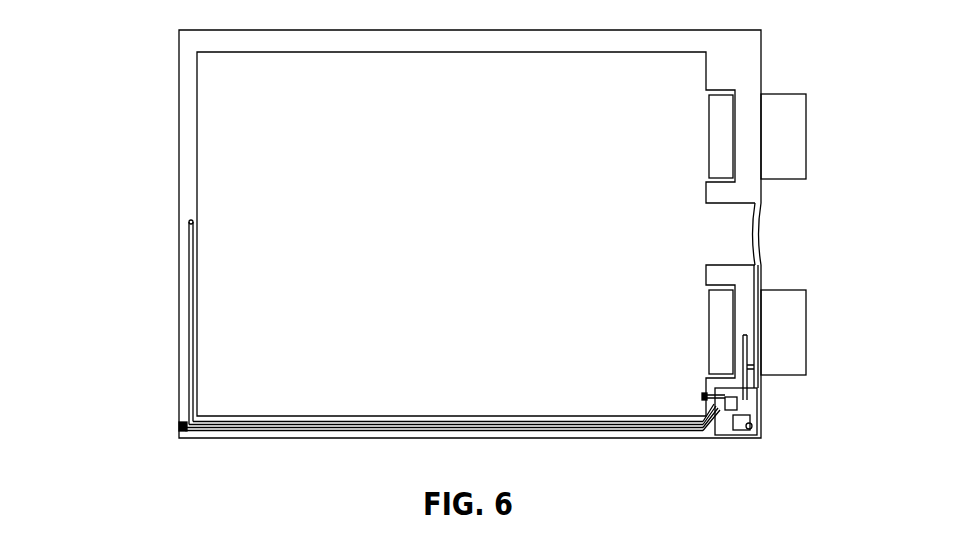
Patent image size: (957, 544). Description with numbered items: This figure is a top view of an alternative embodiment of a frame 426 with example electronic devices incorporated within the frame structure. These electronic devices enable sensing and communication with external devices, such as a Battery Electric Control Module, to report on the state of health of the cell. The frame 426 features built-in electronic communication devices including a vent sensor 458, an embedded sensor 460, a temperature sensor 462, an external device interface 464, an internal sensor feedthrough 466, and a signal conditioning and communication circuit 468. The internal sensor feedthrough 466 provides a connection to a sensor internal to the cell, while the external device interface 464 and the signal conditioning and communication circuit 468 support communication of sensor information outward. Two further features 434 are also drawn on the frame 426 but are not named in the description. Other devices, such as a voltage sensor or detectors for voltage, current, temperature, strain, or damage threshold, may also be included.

The frame 426 is at (136, 51).
The connectors 434 is at (790, 135).
The vent sensor 458 is at (763, 238).
The embedded sensor 460 is at (189, 224).
The temperature sensor 462 is at (745, 336).
The external device interface 464 is at (183, 428).
The internal sensor feedthrough 466 is at (686, 392).
The signal conditioning and communication circuit 468 is at (740, 433).